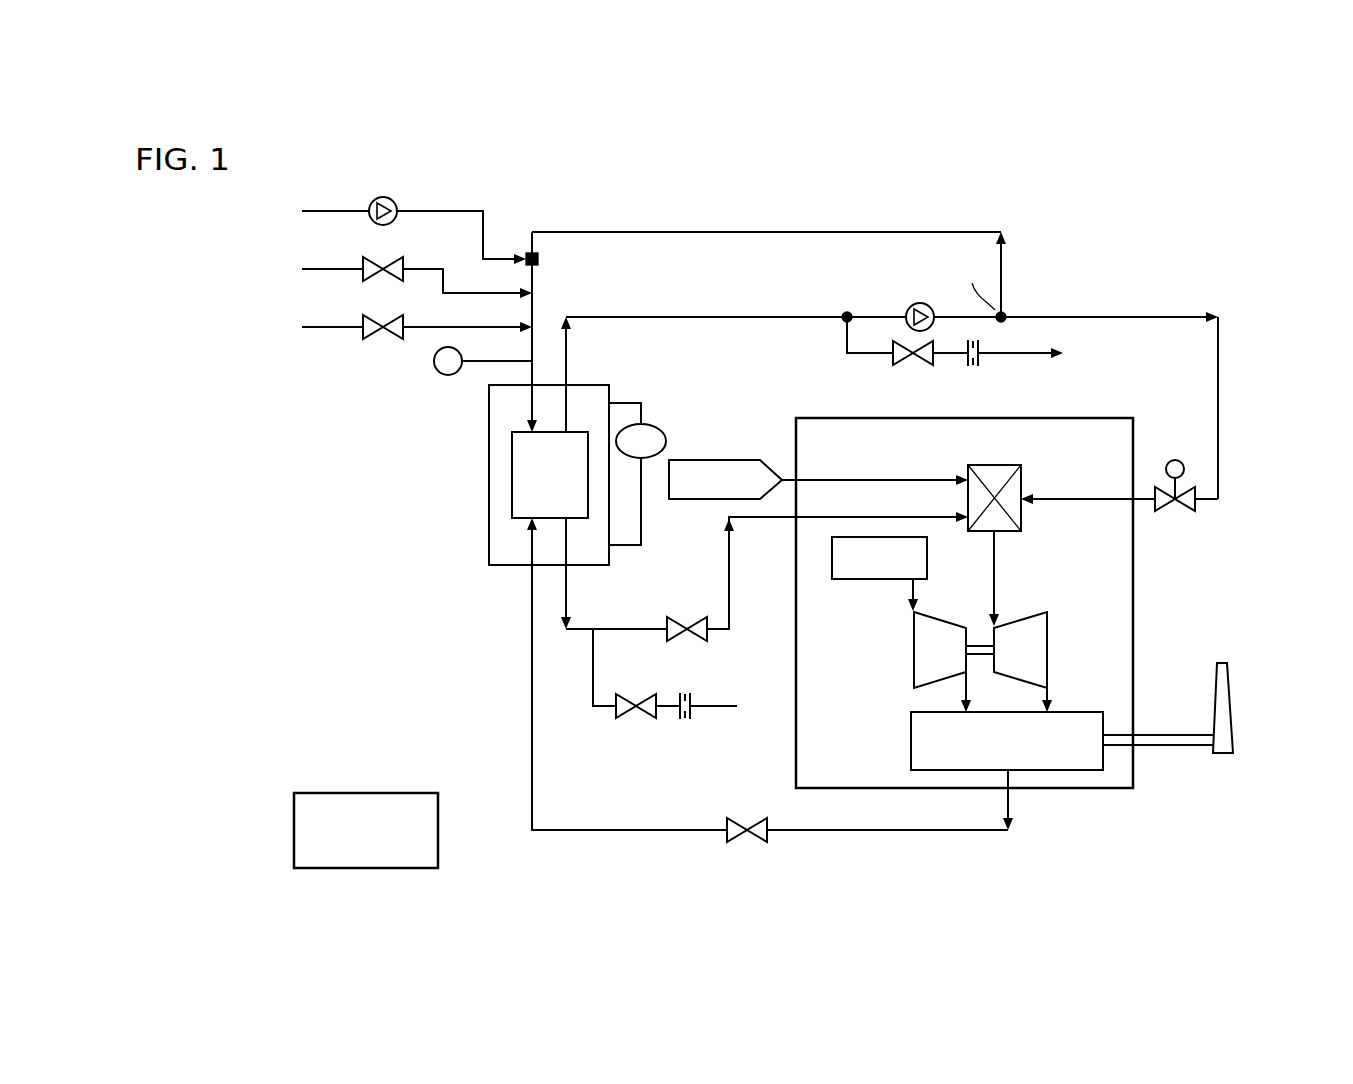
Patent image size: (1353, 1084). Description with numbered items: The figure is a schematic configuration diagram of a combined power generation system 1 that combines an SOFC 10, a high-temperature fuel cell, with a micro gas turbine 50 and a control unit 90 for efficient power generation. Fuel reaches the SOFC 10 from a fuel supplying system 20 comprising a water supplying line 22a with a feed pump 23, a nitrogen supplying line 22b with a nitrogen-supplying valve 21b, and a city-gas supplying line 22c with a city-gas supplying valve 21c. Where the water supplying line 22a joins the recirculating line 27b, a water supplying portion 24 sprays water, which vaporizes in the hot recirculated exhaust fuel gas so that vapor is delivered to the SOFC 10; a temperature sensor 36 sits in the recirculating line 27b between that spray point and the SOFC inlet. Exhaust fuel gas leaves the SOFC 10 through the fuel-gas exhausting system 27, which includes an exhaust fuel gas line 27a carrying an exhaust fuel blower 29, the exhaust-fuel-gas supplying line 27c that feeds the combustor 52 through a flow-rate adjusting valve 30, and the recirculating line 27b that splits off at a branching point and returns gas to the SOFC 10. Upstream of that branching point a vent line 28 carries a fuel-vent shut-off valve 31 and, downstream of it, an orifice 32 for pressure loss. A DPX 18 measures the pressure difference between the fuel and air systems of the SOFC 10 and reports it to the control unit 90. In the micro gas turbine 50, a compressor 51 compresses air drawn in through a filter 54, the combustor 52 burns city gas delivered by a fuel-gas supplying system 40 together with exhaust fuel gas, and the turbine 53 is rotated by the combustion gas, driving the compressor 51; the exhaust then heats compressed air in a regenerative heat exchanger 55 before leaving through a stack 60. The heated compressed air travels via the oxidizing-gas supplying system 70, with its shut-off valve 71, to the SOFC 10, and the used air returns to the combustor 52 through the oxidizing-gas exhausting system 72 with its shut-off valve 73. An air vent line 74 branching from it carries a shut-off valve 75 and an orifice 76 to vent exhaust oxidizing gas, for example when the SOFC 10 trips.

The combined power generation system 1 is at (490, 860).
The SOFC 10 is at (489, 467).
The DPX 18 is at (658, 430).
The fuel supplying system 20 is at (509, 228).
The nitrogen-supplying valve 21b is at (400, 264).
The city-gas supplying valve 21c is at (375, 340).
The water supplying line 22a is at (333, 209).
The nitrogen supplying line 22b is at (333, 268).
The city-gas supplying line 22c is at (330, 329).
The feed pump 23 is at (393, 201).
The water supplying portion 24 is at (545, 260).
The fuel-gas exhausting system 27 is at (1022, 305).
The exhaust fuel gas line 27a is at (740, 316).
The recirculating line 27b is at (578, 230).
The exhaust-fuel-gas supplying line 27c is at (1105, 316).
The vent line 28 is at (846, 340).
The exhaust fuel blower 29 is at (910, 305).
The flow-rate adjusting valve 30 is at (1188, 512).
The fuel-vent shut-off valve 31 is at (905, 365).
The orifice 32 is at (983, 360).
The temperature sensor 36 is at (449, 377).
The fuel-gas supplying system 40 is at (867, 479).
The micro gas turbine 50 is at (964, 642).
The compressor 51 is at (913, 664).
The combustor 52 is at (1024, 470).
The turbine 53 is at (1050, 648).
The filter 54 is at (852, 580).
The regenerative heat exchanger 55 is at (911, 740).
The stack 60 is at (1233, 717).
The oxidizing-gas supplying system 70 is at (598, 818).
The shut-off valve 71 is at (755, 842).
The oxidizing-gas exhausting system 72 is at (640, 627).
The shut-off valve 73 is at (692, 616).
The air vent line 74 is at (593, 668).
The shut-off valve 75 is at (642, 718).
The orifice 76 is at (692, 712).
The control unit 90 is at (365, 792).